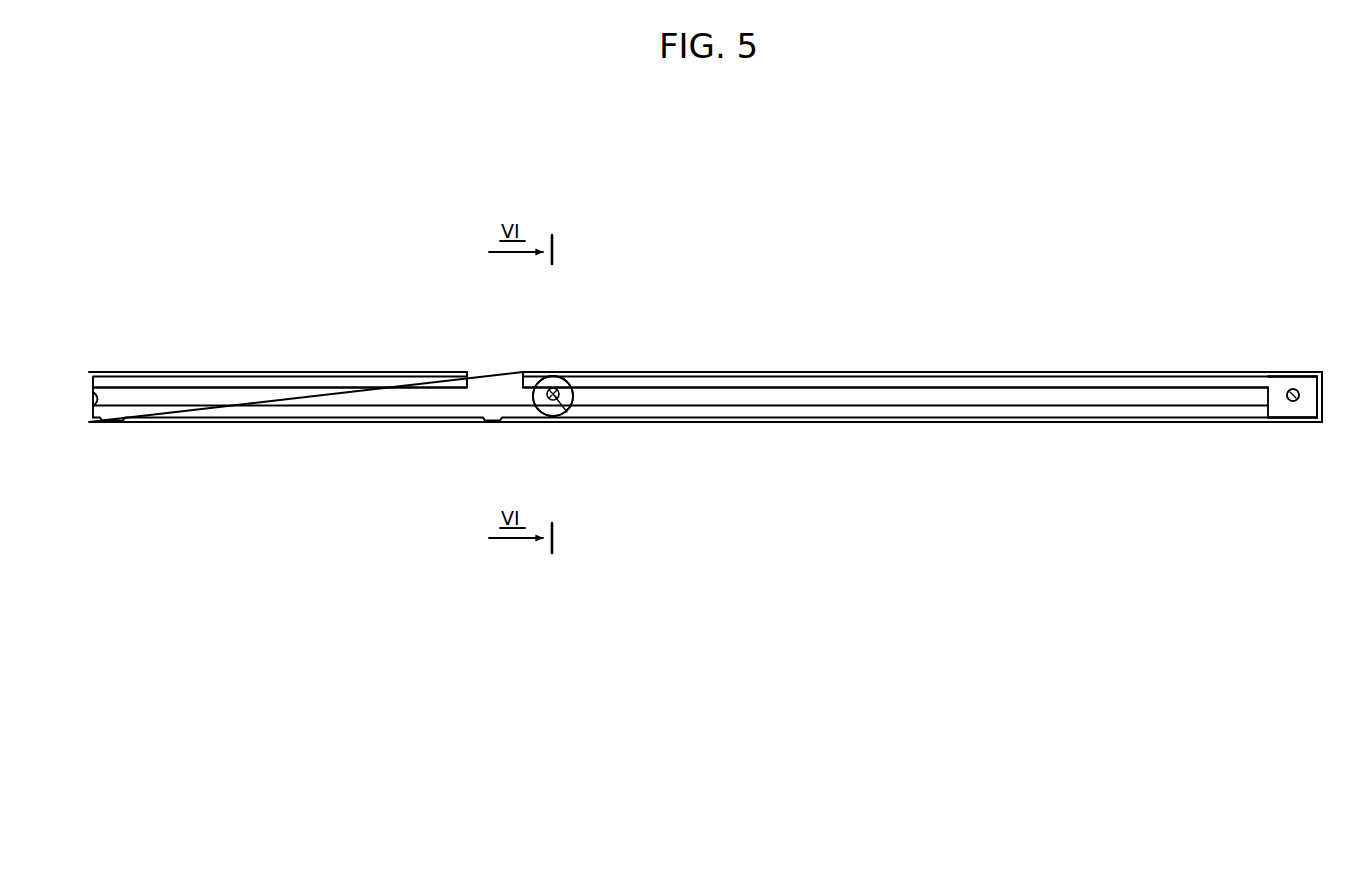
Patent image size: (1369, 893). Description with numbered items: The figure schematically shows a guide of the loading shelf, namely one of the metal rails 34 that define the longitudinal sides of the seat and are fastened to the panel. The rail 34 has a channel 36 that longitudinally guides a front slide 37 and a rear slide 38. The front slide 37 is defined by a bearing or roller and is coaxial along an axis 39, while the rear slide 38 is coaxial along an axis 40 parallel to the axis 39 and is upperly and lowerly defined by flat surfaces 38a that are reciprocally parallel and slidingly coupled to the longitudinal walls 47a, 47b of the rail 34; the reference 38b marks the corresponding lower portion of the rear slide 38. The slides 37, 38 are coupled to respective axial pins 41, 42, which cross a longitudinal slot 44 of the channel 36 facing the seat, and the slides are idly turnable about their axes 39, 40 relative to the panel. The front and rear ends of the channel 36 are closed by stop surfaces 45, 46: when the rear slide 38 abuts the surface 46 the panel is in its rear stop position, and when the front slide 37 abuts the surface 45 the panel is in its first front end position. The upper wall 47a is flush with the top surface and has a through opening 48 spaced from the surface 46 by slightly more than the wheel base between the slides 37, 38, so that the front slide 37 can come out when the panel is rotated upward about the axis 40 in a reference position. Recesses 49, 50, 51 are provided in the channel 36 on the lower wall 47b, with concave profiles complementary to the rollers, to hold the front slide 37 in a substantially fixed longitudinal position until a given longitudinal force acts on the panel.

The rail 34 is at (774, 426).
The channel 36 is at (1015, 405).
The front slide 37 is at (578, 399).
The rear slide 38 is at (1283, 407).
The flat surface 38a is at (1274, 368).
The lower portion of end cap 38b is at (1277, 427).
The axis 39 is at (553, 394).
The axis 40 is at (1289, 389).
The axial pin 41 is at (570, 414).
The axial pin 42 is at (1293, 402).
The longitudinal slot 44 is at (1102, 391).
The stop surface 45 is at (98, 422).
The stop surface 46 is at (1316, 392).
The longitudinal wall 47a is at (815, 372).
The longitudinal wall 47b is at (925, 422).
The through opening 48 is at (479, 382).
The recess 49 is at (492, 411).
The recess 50 is at (548, 408).
The recess 51 is at (115, 412).